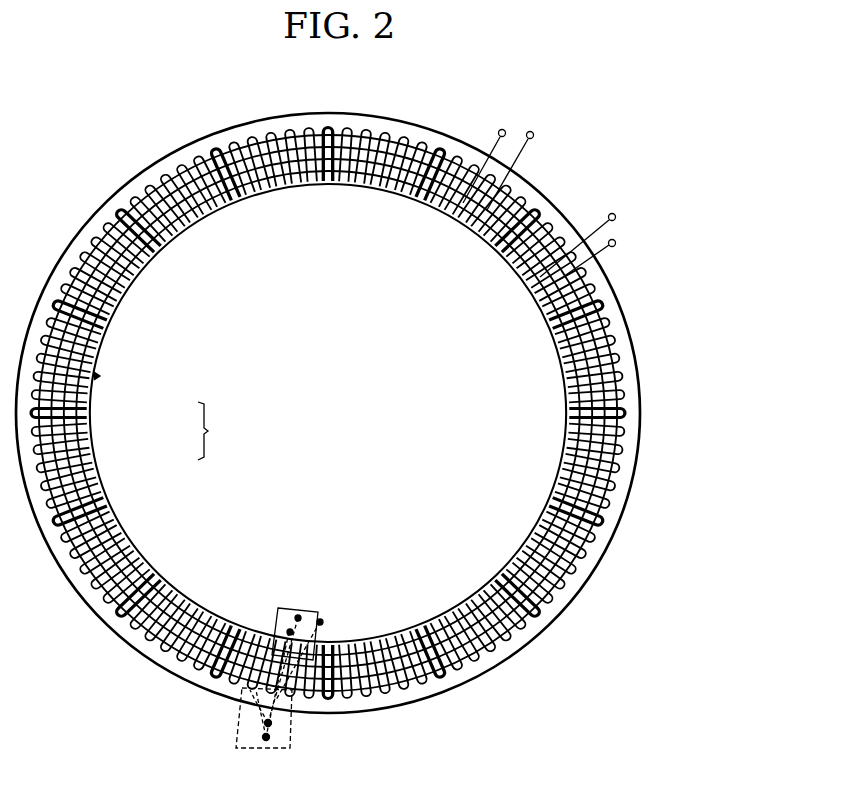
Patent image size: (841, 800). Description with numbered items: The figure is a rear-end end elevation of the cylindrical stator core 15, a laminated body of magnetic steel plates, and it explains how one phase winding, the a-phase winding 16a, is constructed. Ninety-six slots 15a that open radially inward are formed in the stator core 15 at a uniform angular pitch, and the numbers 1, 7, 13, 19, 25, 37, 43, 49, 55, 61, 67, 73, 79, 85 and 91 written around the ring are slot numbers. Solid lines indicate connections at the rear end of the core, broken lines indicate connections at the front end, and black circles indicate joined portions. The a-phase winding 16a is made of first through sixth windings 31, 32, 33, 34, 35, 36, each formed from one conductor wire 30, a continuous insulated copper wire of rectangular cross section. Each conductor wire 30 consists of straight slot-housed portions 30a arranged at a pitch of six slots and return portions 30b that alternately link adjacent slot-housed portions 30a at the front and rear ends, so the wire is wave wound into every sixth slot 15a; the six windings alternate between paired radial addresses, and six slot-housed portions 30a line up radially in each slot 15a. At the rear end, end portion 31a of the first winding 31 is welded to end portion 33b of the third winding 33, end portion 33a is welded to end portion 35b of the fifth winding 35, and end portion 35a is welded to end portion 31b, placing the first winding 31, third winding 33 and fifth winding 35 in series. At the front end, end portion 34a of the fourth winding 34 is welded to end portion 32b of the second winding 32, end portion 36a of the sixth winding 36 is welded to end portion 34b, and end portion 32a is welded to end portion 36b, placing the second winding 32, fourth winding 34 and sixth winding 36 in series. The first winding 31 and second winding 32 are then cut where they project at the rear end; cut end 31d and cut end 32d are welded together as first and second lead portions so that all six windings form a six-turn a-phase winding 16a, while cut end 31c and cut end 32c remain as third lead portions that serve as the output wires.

The stator core 15 is at (169, 155).
The slots 15a is at (160, 198).
The a-phase winding 16a is at (98, 376).
The conductor wire 30 is at (218, 431).
The slot-housed portions 30a is at (92, 420).
The return portions 30b is at (93, 458).
The first winding 31 is at (228, 640).
The second winding 32 is at (150, 590).
The third winding 33 is at (207, 628).
The fourth winding 34 is at (148, 565).
The fifth winding 35 is at (178, 612).
The sixth winding 36 is at (135, 560).
The end portion of the first winding 31a is at (299, 616).
The end portion of the first winding 31b is at (298, 661).
The cut end of the first winding 31c is at (534, 133).
The cut end of the first winding 31d is at (503, 129).
The end portion of the second winding 32a is at (240, 728).
The end portion of the second winding 32b is at (259, 706).
The cut end of the second winding 32c is at (616, 243).
The cut end of the second winding 32d is at (614, 213).
The end portion of the third winding 33a is at (289, 630).
The end portion of the third winding 33b is at (283, 670).
The end portion of the fourth winding 34a is at (270, 724).
The end portion of the fourth winding 34b is at (261, 713).
The end portion of the fifth winding 35a is at (320, 620).
The end portion of the fifth winding 35b is at (277, 684).
The end portion of the sixth winding 36a is at (268, 738).
The end portion of the sixth winding 36b is at (264, 718).
The slot number 1 is at (230, 646).
The slot number 7 is at (145, 594).
The slot number 13 is at (93, 512).
The slot number 19 is at (72, 424).
The slot number 25 is at (93, 327).
The slot number 37 is at (233, 189).
The slot number 43 is at (333, 170).
The slot number 49 is at (424, 186).
The slot number 55 is at (509, 241).
The slot number 61 is at (564, 324).
The slot number 67 is at (581, 422).
The slot number 73 is at (565, 512).
The slot number 79 is at (509, 592).
The slot number 85 is at (424, 644).
The slot number 91 is at (332, 666).